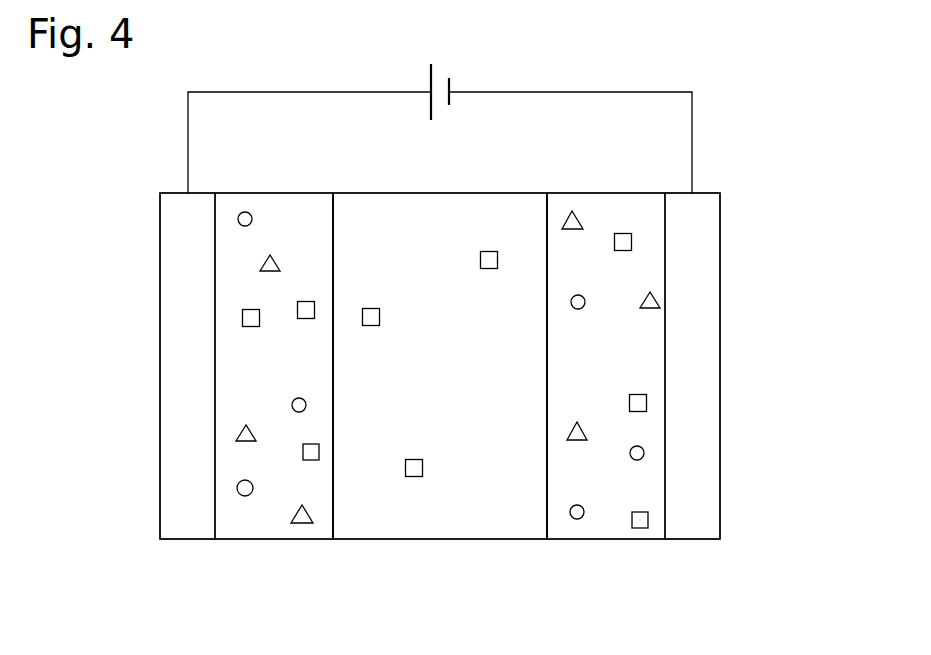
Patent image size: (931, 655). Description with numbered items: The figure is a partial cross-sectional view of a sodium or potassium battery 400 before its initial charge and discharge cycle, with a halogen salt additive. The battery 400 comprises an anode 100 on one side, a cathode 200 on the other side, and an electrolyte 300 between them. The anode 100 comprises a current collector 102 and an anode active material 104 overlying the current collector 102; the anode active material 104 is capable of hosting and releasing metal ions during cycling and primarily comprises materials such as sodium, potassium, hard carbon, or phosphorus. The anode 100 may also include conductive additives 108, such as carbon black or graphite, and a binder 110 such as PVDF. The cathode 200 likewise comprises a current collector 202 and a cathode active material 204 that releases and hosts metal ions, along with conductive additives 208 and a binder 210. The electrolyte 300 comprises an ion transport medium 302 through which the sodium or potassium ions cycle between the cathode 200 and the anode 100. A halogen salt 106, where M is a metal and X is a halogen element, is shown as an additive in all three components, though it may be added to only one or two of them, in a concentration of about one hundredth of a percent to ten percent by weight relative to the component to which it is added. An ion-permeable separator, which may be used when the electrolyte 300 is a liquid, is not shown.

The anode 100 is at (126, 340).
The current collector 102 is at (211, 377).
The anode active material 104 is at (297, 377).
The halogen salt (MX) 106 is at (405, 466).
The conductive additives 108 is at (245, 497).
The binder 110 is at (302, 523).
The cathode 200 is at (779, 341).
The current collector 202 is at (714, 377).
The cathode active material 204 is at (628, 377).
The conductive additives 208 is at (575, 519).
The binder 210 is at (574, 213).
The electrolyte 300 is at (444, 555).
The ion transport medium 302 is at (462, 377).
The battery 400 is at (761, 107).